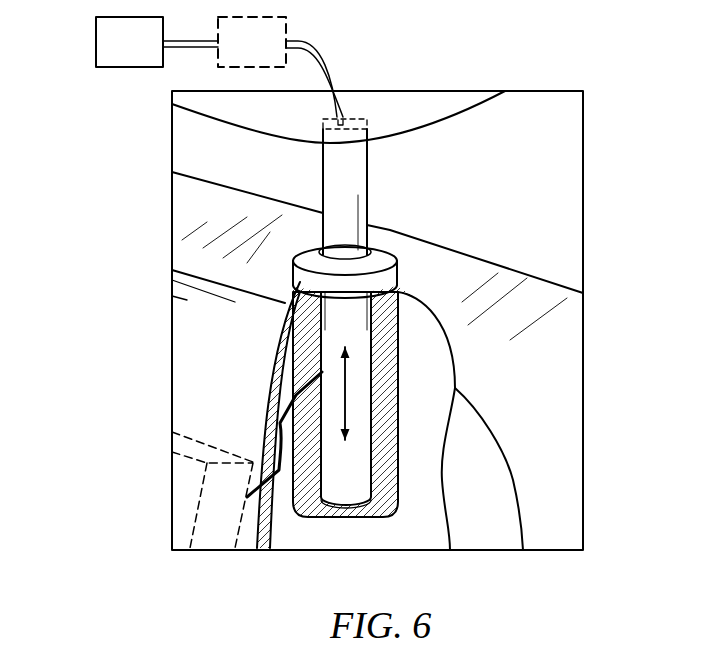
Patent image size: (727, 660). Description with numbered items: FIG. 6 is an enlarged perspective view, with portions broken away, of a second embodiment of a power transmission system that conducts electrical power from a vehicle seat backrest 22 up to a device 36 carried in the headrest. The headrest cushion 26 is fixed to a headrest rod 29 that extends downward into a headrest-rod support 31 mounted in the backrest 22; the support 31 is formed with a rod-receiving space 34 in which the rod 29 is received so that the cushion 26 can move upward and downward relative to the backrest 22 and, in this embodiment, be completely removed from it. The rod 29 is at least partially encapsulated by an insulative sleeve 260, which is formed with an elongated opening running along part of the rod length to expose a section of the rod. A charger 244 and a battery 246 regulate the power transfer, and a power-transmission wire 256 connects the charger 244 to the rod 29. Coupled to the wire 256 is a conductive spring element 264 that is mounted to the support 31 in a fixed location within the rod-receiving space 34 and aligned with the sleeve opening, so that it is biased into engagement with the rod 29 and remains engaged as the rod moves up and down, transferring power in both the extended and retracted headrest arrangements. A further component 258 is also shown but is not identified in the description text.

The backrest 22 is at (565, 337).
The headrest cushion 26 is at (463, 113).
The headrest rod 29 is at (397, 192).
The headrest-rod support 31 is at (404, 372).
The rod-receiving space 34 is at (320, 248).
The device 36 is at (96, 43).
The charger 244 is at (218, 447).
The battery 246 is at (288, 34).
The power-transmission wire 256 is at (273, 490).
The sensor 258 is at (348, 118).
The insulative sleeve 260 is at (357, 181).
The conductive spring element 264 is at (318, 372).